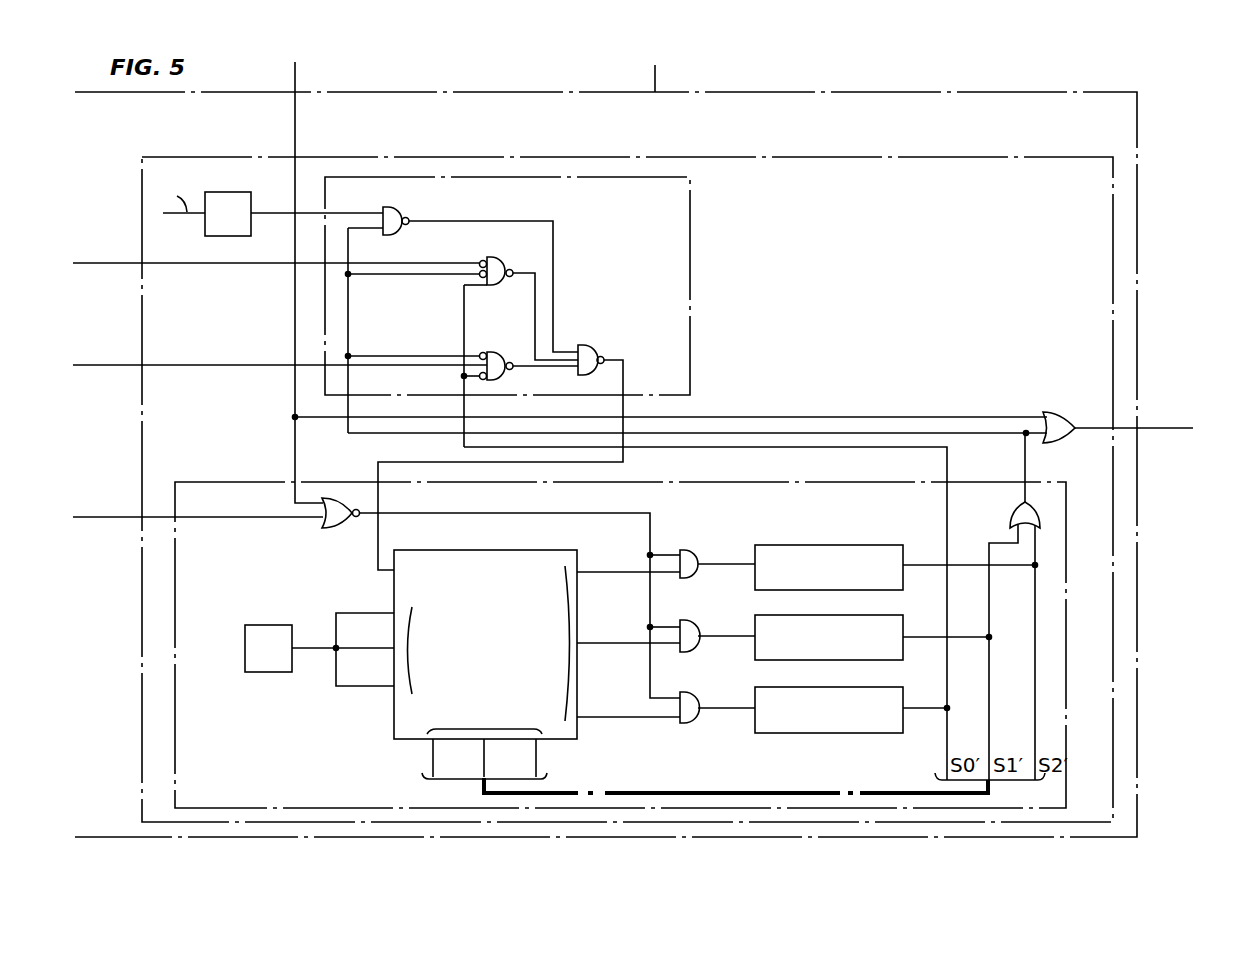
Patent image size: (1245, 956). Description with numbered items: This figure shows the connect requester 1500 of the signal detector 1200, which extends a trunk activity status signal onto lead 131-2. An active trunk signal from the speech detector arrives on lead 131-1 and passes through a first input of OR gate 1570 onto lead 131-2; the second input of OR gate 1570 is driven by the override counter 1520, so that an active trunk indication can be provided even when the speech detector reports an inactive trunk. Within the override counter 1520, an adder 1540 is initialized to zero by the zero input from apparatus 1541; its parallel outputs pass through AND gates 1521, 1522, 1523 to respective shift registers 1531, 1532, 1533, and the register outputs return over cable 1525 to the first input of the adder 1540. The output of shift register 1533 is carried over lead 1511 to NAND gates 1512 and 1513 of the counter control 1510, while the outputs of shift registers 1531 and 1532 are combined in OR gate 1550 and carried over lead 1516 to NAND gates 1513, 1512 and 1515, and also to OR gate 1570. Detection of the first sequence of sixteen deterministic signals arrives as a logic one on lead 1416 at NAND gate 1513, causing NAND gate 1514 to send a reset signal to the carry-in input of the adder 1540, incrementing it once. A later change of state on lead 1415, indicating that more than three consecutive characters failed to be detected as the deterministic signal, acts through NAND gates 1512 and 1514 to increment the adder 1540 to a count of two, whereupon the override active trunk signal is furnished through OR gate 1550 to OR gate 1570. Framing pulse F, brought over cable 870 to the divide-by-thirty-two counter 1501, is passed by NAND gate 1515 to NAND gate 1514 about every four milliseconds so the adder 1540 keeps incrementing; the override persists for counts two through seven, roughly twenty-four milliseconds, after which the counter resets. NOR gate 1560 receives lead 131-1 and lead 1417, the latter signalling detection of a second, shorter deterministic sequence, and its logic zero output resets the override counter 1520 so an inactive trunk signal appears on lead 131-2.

The lead 131-1 is at (297, 78).
The cable 870 is at (655, 80).
The signal detector 1200 is at (1000, 81).
The connect requester 1500 is at (938, 157).
The counter control 1510 is at (690, 202).
The "÷32" counter 1501 is at (230, 181).
The NAND gate 1515 is at (388, 207).
The NAND gate 1512 is at (497, 257).
The NAND gate 1513 is at (495, 352).
The NAND gate 1514 is at (585, 345).
The lead 1415 is at (90, 263).
The lead 1416 is at (90, 365).
The lead 1417 is at (90, 517).
The NOR gate 1560 is at (337, 528).
The lead 1516 is at (918, 420).
The OR gate 1570 is at (1060, 413).
The lead 131-2 is at (1167, 428).
The lead 1511 is at (672, 449).
The override counter 1520 is at (848, 482).
The adder 1540 is at (497, 550).
The apparatus 1541 is at (259, 624).
The AND gate 1521 is at (690, 550).
The AND gate 1522 is at (694, 608).
The AND gate 1523 is at (694, 680).
The shift register 1531 is at (848, 545).
The shift register 1532 is at (852, 601).
The shift register 1533 is at (854, 673).
The OR gate 1550 is at (1010, 512).
The cable 1525 is at (738, 793).